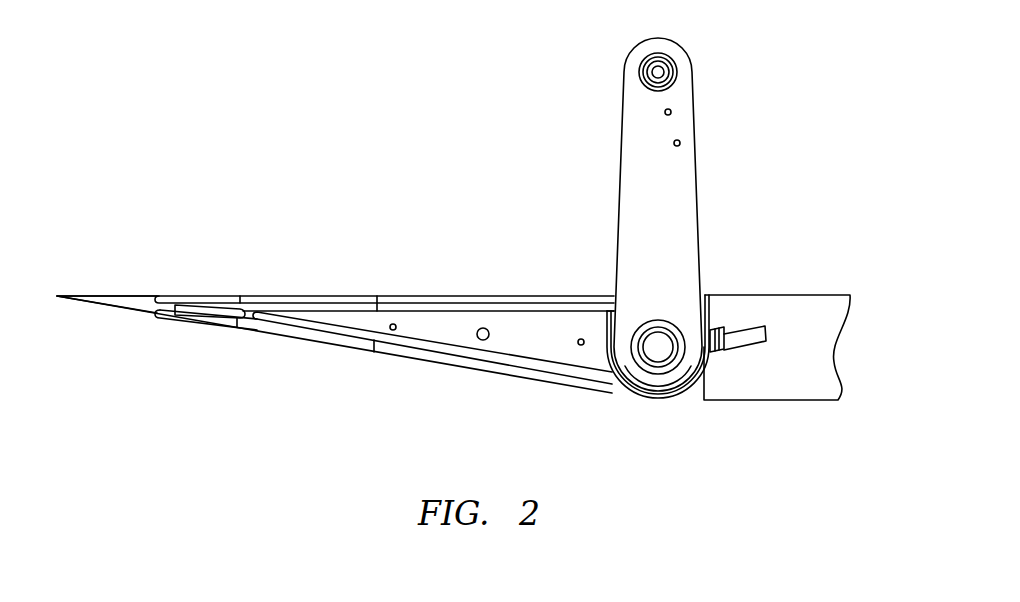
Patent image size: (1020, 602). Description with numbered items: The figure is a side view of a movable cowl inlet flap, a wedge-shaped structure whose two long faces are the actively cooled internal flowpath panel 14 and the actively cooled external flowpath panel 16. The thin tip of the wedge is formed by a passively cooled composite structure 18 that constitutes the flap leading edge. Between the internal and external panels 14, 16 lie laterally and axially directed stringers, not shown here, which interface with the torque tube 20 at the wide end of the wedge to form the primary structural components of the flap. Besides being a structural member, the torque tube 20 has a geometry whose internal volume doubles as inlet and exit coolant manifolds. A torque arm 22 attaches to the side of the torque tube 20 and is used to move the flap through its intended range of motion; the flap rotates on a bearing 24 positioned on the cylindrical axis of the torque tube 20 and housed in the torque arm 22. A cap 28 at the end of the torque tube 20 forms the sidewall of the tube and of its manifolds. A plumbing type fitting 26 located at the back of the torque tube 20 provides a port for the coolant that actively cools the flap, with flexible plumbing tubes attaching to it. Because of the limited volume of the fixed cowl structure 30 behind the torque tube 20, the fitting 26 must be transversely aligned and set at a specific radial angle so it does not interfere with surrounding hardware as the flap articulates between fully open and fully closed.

The internal flowpath panel 14 is at (501, 292).
The external flowpath panel 16 is at (330, 347).
The passively cooled composite structure 18 is at (57, 287).
The torque tube 20 is at (685, 402).
The torque arm 22 is at (668, 188).
The bearing 24 is at (641, 372).
The plumbing type fitting 26 is at (742, 326).
The cap 28 is at (655, 340).
The fixed cowl structure 30 is at (823, 326).